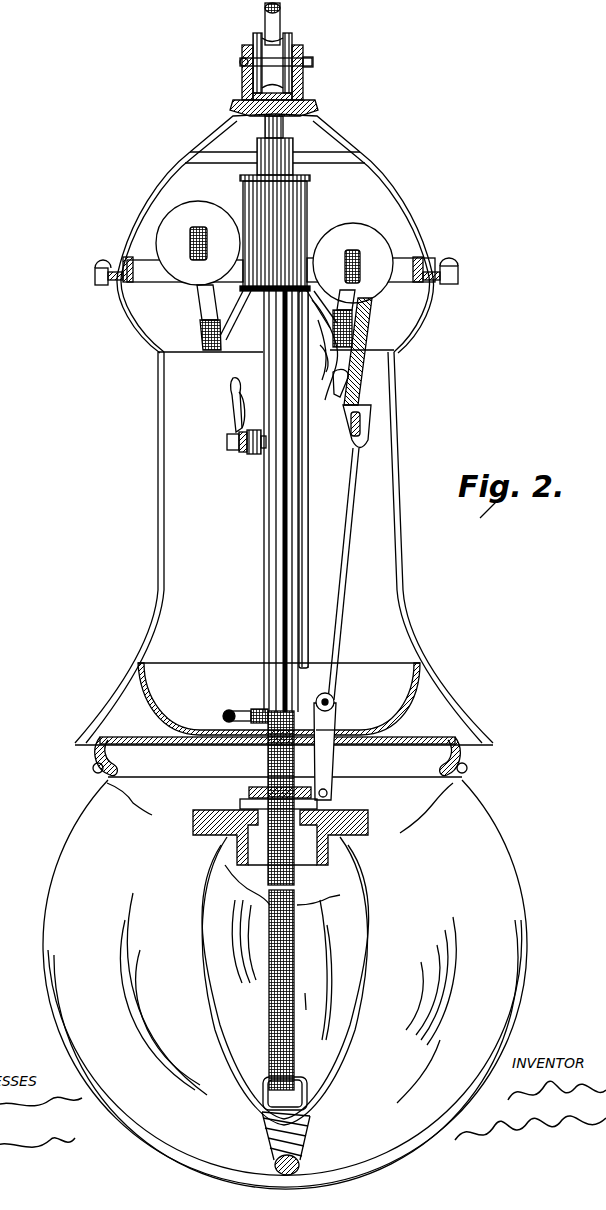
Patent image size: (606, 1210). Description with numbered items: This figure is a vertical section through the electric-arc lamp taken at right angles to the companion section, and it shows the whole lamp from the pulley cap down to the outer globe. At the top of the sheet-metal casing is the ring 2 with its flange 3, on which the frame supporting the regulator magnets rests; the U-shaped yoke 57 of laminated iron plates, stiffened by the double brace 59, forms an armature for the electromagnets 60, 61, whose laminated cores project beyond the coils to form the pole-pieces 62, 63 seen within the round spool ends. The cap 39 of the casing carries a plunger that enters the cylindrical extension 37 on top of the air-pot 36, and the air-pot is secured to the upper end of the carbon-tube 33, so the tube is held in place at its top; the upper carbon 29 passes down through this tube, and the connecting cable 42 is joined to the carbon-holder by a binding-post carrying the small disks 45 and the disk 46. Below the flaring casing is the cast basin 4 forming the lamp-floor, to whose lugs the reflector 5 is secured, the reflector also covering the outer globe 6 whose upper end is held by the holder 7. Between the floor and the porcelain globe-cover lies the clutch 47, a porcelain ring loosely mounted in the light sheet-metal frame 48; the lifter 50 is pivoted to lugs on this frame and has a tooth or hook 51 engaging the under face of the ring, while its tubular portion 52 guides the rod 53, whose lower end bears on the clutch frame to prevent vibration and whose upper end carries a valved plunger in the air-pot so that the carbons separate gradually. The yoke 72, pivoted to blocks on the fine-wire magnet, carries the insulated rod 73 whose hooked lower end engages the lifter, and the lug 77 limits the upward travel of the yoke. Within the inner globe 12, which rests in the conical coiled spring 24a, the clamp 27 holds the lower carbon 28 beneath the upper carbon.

The ring 2 is at (118, 286).
The flange 3 is at (129, 258).
The basin 4 is at (279, 699).
The reflector 5 is at (432, 738).
The outer globe 6 is at (285, 984).
The holder 7 is at (462, 766).
The inner globe 12 is at (246, 949).
The conical coiled spring 24a is at (304, 1143).
The clamp 27 is at (305, 1080).
The lower carbon 28 is at (296, 990).
The upper carbon 29 is at (267, 758).
The carbon-tube 33 is at (263, 540).
The air-pot 36 is at (243, 184).
The cylindrical extension 37 is at (285, 154).
The cap 39 is at (222, 130).
The connecting wire or cable 42 is at (232, 384).
The small disks 45 is at (232, 452).
The disk 46 is at (250, 456).
The clutch 47 is at (240, 801).
The sheet-metal frame 48 is at (252, 786).
The lifter 50 is at (334, 766).
The tooth or hook 51 is at (330, 802).
The tubular portion 52 is at (338, 718).
The rod 53 is at (307, 459).
The U-shaped yoke 57 is at (202, 328).
The double brace 59 is at (229, 335).
The electromagnet 60 is at (198, 243).
The electromagnet 61 is at (357, 276).
The pole-piece 62 is at (200, 228).
The pole-piece 63 is at (353, 263).
The yoke 72 is at (368, 333).
The rod 73 is at (347, 484).
The lug 77 is at (335, 385).